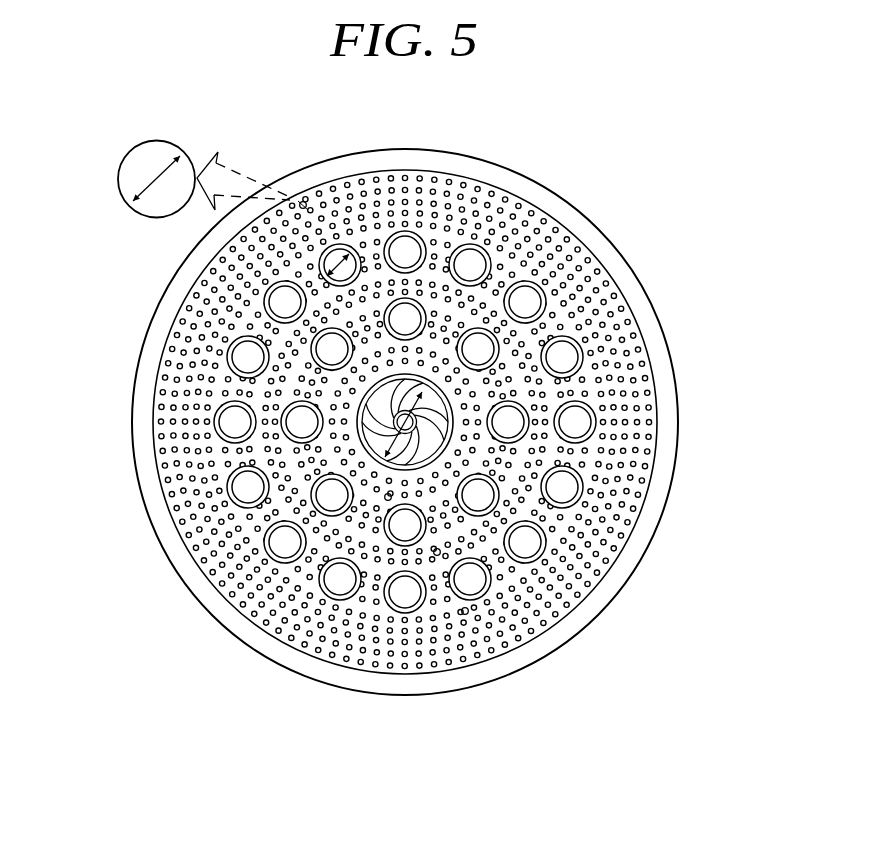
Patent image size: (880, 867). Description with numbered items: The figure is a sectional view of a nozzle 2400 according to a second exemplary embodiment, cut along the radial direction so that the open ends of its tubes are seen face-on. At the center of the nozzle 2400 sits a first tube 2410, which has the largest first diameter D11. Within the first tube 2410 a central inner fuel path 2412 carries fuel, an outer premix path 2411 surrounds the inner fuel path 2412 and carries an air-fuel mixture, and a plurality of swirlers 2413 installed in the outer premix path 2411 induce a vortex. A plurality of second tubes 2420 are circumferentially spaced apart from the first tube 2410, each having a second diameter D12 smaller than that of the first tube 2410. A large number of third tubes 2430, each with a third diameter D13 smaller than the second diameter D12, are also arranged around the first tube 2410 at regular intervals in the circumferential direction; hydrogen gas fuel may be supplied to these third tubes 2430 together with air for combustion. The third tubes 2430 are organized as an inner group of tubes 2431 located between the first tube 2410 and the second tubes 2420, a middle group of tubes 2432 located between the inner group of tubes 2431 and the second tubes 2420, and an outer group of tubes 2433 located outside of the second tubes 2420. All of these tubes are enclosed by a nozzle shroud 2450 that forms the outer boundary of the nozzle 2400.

The nozzle 2400 is at (629, 221).
The first tube 2410 is at (407, 426).
The outer premix path 2411 is at (357, 443).
The inner fuel path 2412 is at (392, 418).
The swirlers 2413 is at (388, 393).
The second tubes 2420 is at (547, 302).
The third tubes 2430 is at (474, 759).
The inner group of tubes 2431 is at (388, 500).
The middle group of tubes 2432 is at (437, 556).
The outer group of tubes 2433 is at (465, 615).
The nozzle shroud 2450 is at (676, 467).
The first diameter D11 is at (400, 397).
The second diameter D12 is at (322, 258).
The third diameter D13 is at (155, 176).